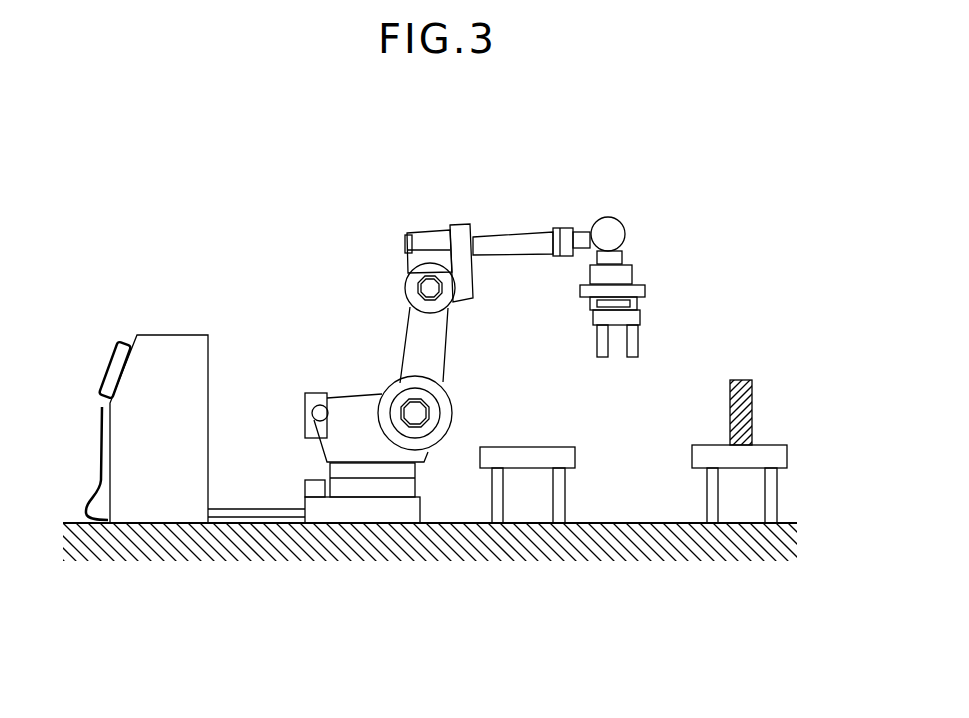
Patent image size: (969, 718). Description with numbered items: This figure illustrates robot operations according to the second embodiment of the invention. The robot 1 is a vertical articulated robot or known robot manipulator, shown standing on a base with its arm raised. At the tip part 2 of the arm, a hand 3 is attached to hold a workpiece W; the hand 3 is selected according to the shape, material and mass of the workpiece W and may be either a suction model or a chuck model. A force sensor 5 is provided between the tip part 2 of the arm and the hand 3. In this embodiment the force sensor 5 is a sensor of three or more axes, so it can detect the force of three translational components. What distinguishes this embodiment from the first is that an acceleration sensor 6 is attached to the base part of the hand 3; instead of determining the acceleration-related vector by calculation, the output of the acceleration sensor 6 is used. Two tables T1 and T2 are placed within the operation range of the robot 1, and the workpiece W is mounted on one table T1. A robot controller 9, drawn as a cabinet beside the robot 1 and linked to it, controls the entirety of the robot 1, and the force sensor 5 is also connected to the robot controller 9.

The robot 1 is at (416, 202).
The tip part of the arm 2 is at (612, 247).
The hand 3 is at (595, 345).
The force sensor 5 is at (638, 290).
The acceleration sensor 6 is at (640, 327).
The robot controller 9 is at (179, 350).
The table T1 is at (777, 498).
The table T2 is at (565, 498).
The workpiece W is at (753, 412).